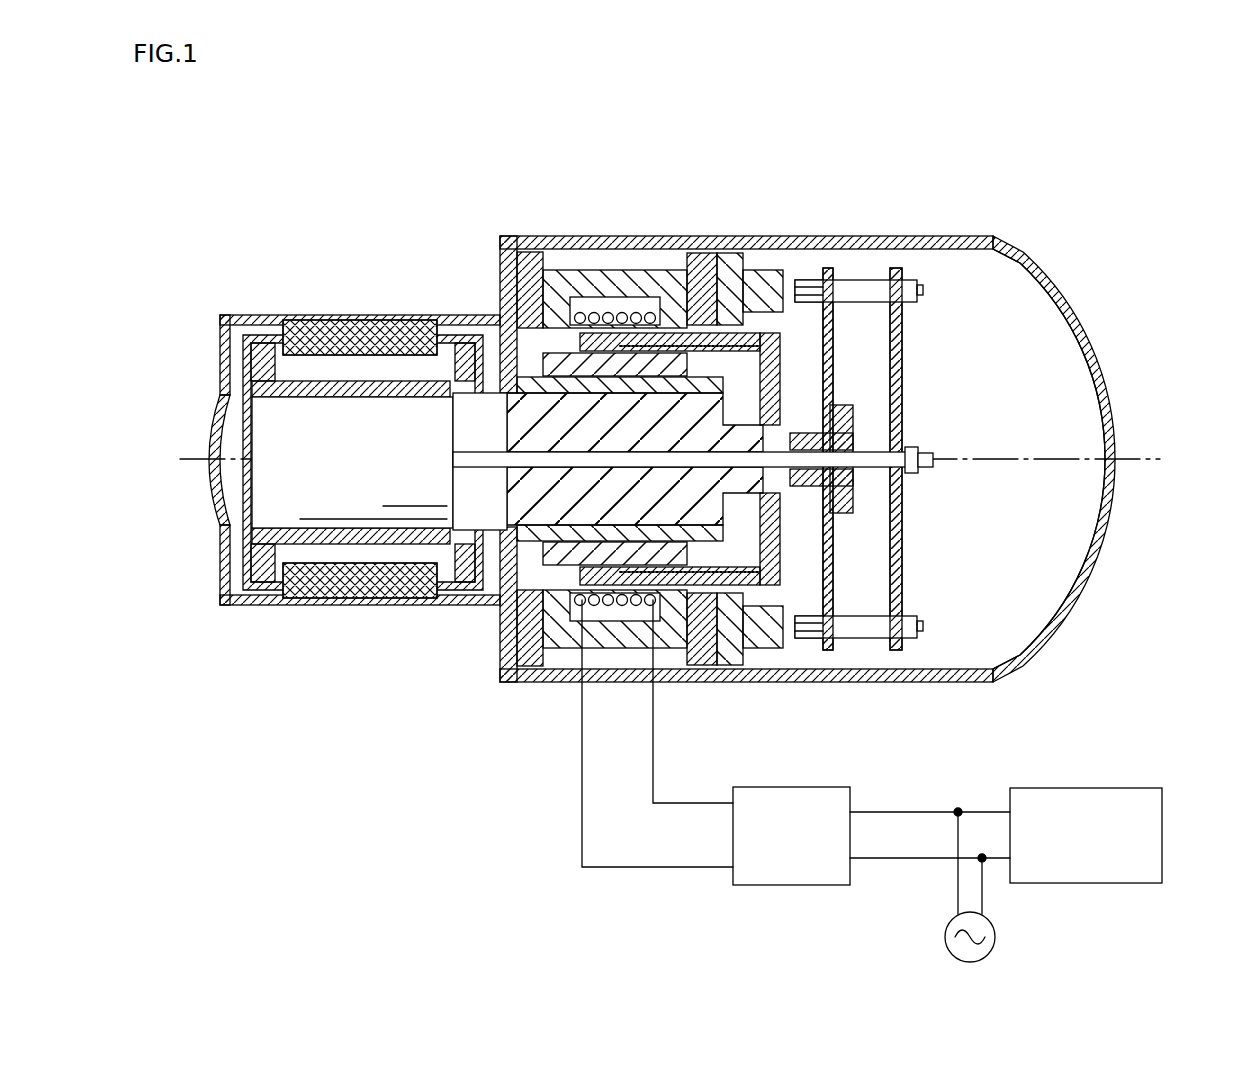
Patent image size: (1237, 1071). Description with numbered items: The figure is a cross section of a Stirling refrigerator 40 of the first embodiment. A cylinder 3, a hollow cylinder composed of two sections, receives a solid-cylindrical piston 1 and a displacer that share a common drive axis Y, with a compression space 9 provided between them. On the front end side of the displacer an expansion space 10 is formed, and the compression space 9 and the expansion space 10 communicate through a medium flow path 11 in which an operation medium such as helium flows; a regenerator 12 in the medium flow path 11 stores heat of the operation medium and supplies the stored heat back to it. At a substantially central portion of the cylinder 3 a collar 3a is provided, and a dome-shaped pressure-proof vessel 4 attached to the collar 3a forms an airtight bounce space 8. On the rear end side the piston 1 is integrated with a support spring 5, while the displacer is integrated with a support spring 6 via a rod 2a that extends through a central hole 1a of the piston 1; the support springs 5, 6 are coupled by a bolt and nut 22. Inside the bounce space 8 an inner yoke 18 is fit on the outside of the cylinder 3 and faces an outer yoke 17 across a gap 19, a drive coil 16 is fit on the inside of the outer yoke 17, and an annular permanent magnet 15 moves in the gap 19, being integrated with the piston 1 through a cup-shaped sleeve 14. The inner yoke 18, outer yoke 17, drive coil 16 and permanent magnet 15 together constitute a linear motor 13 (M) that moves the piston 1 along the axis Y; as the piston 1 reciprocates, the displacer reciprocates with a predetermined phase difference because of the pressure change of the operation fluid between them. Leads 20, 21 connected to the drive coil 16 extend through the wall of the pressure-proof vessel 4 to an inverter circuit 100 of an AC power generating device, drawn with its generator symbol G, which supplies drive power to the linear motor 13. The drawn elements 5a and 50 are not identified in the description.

The piston 1 is at (658, 505).
The central hole of piston 1a is at (808, 248).
The rod 2a is at (455, 580).
The cylinder 3 is at (257, 357).
The collar (flange) 3a is at (505, 672).
The pressure-proof vessel 4 is at (1067, 298).
The support spring 5 is at (840, 645).
The bearing boss 5a is at (818, 645).
The support spring 6 is at (903, 582).
The bounce space (back space) 8 is at (1067, 370).
The compression space 9 is at (448, 360).
The expansion space 10 is at (206, 400).
The medium flow path 11 is at (240, 600).
The regenerator 12 is at (330, 600).
The linear motor 13 is at (638, 388).
The cup-shaped sleeve 14 is at (740, 612).
The permanent magnet 15 is at (665, 345).
The drive coil 16 is at (598, 290).
The outer yoke 17 is at (633, 340).
The inner yoke 18 is at (710, 415).
The gap 19 is at (551, 250).
The lead 20 is at (568, 655).
The lead 21 is at (646, 635).
The bolt and nut 22 is at (922, 632).
The Stirling refrigerator 40 is at (1022, 113).
The spacer 50 is at (742, 305).
The inverter circuit 100 is at (795, 887).
The power source G is at (995, 937).
The axis Y is at (1147, 460).